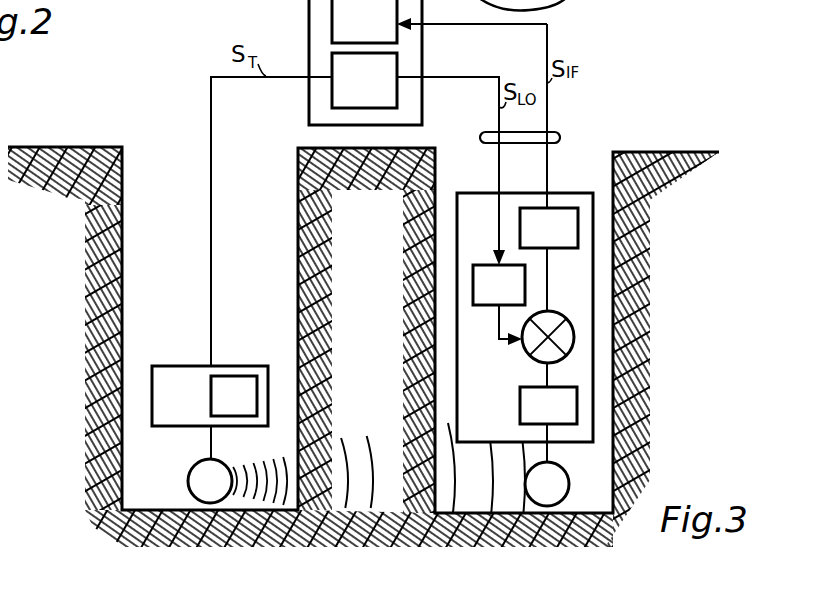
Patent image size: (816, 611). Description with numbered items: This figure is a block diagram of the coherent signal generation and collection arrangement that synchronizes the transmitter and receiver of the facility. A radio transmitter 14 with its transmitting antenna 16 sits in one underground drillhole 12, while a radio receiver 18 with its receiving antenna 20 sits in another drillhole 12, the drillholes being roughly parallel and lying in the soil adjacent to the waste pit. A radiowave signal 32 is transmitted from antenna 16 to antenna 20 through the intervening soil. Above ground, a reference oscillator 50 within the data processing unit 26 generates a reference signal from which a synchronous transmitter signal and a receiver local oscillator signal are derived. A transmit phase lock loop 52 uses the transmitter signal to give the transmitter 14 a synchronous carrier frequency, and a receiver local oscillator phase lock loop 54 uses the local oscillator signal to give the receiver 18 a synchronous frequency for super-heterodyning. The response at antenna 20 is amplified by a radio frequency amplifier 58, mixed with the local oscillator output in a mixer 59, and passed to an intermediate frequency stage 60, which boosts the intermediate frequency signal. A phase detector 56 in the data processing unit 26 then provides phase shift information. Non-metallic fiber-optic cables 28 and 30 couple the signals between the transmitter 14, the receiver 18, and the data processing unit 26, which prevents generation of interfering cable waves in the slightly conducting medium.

The underground drillhole 12 is at (156, 203).
The radio transmitter 14 is at (171, 410).
The transmitting antenna 16 is at (201, 494).
The radio receiver 18 is at (479, 378).
The receiving antenna 20 is at (538, 497).
The data processing unit 26 is at (309, 40).
The non-metallic fiber-optic cable 28 is at (211, 142).
The non-metallic fiber-optic cable 30 is at (560, 140).
The radiowave signal 32 is at (379, 440).
The reference oscillator 50 is at (354, 104).
The transmit phase lock loop 52 is at (224, 410).
The receiver local oscillator phase lock loop 54 is at (488, 306).
The phase detector 56 is at (354, 33).
The radio frequency amplifier 58 is at (520, 405).
The mixer 59 is at (568, 318).
The intermediate frequency stage 60 is at (551, 250).